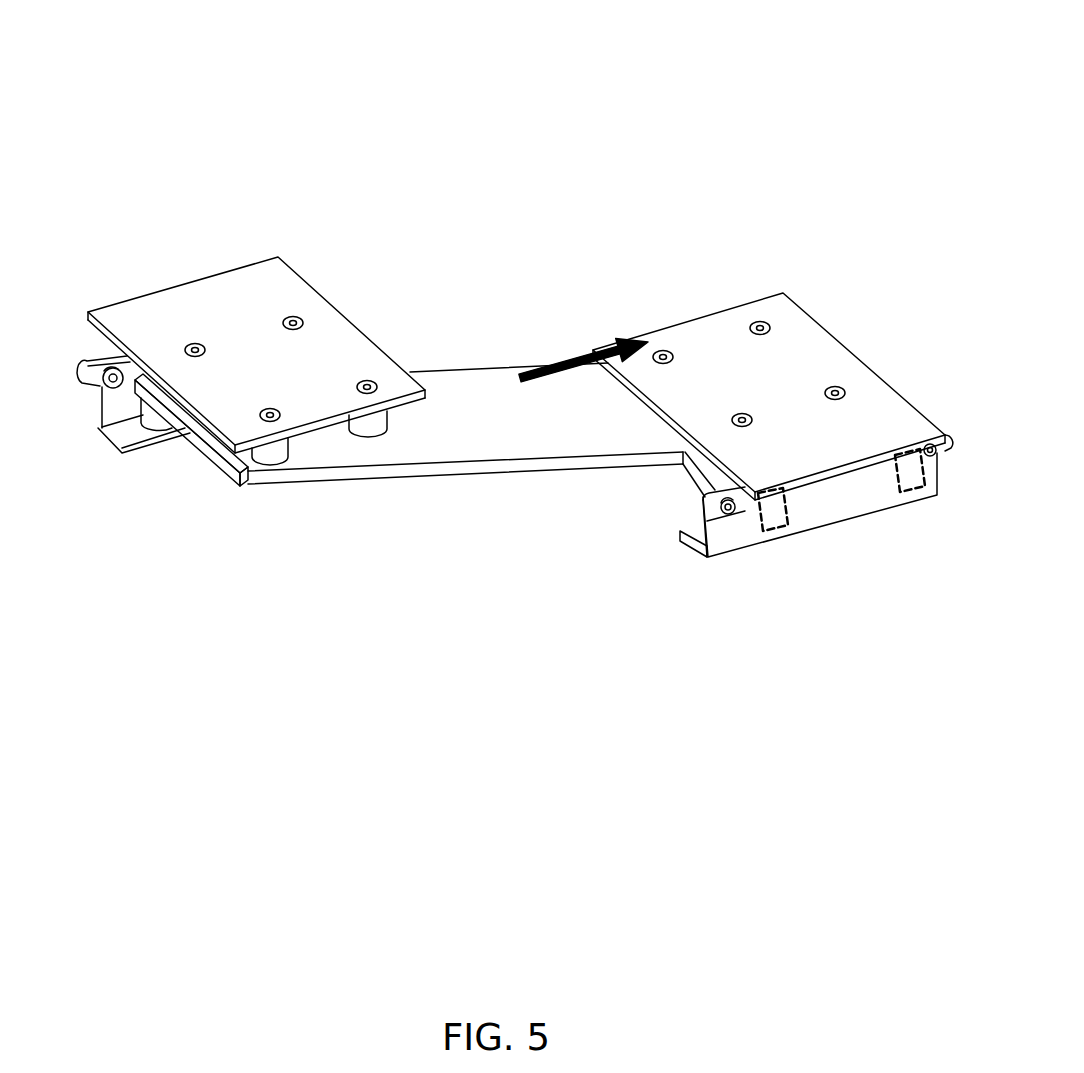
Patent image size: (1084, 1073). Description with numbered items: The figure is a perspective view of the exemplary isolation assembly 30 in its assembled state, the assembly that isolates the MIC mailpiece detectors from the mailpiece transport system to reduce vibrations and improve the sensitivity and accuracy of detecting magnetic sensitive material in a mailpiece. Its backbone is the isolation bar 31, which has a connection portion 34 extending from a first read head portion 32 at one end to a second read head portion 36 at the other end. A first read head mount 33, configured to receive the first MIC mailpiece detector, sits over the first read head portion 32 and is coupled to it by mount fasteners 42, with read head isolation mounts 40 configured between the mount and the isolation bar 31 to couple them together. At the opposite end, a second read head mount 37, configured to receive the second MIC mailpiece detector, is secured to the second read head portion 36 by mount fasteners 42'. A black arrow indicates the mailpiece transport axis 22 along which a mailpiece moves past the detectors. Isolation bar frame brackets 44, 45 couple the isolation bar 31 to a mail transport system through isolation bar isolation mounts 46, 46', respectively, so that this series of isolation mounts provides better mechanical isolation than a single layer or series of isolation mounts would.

The isolation assembly 30 is at (384, 136).
The first read head mount 33 is at (255, 330).
The mount fasteners 42 is at (285, 332).
The read head isolation mounts 40 is at (272, 448).
The first read head portion 32 is at (208, 448).
The isolation bar frame bracket 44 is at (98, 440).
The isolation bar isolation mount 46 is at (138, 465).
The isolation bar 31 is at (515, 443).
The connection portion 34 is at (445, 450).
The mailpiece transport axis 22 is at (583, 378).
The second read head mount 37 is at (702, 338).
The mount fasteners 42' is at (771, 344).
The isolation bar frame bracket 45 is at (858, 490).
The second read head portion 36 is at (685, 465).
The isolation bar isolation mount 46' is at (841, 552).